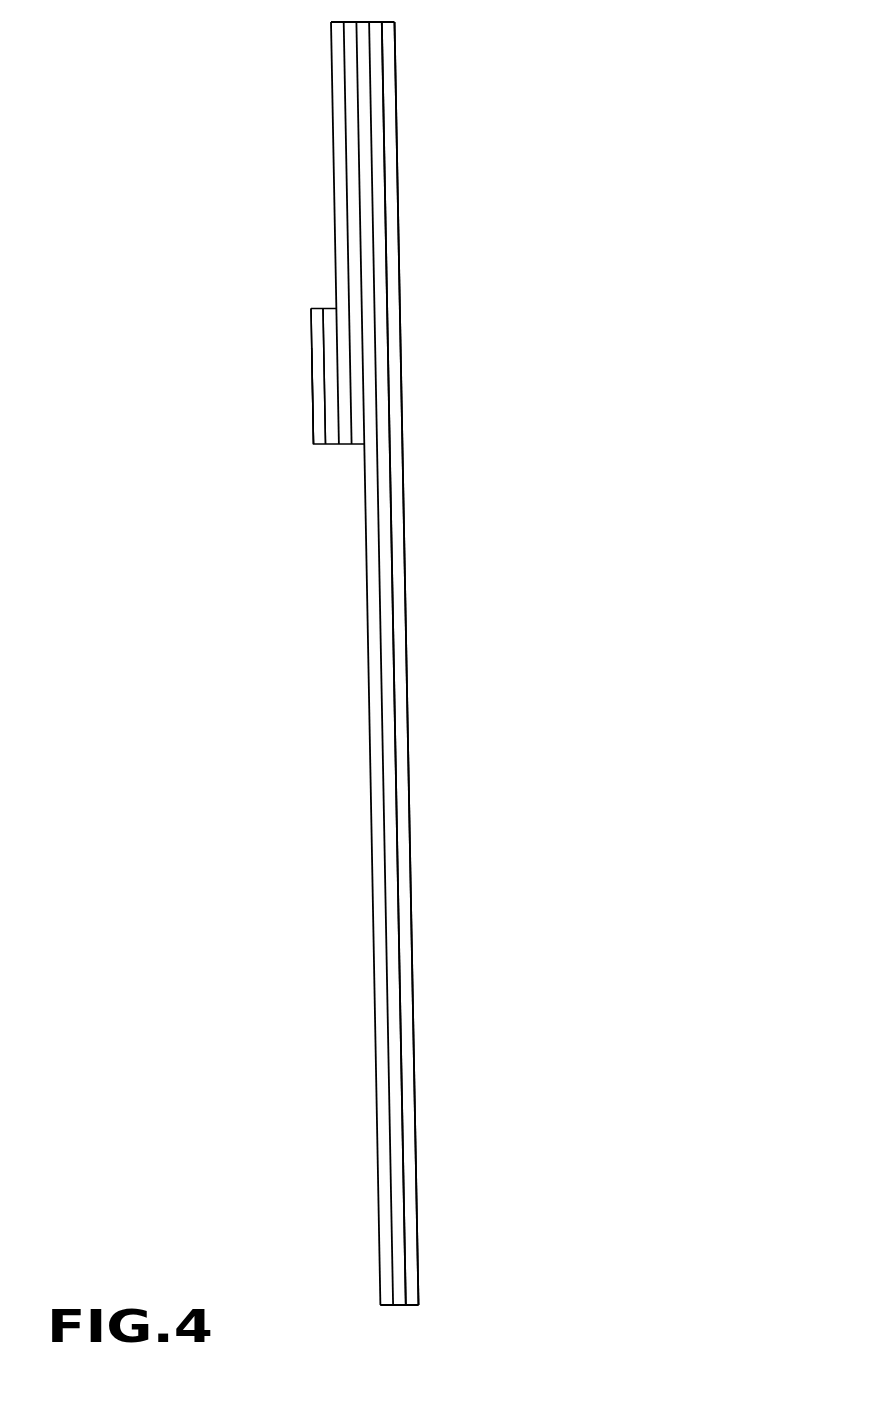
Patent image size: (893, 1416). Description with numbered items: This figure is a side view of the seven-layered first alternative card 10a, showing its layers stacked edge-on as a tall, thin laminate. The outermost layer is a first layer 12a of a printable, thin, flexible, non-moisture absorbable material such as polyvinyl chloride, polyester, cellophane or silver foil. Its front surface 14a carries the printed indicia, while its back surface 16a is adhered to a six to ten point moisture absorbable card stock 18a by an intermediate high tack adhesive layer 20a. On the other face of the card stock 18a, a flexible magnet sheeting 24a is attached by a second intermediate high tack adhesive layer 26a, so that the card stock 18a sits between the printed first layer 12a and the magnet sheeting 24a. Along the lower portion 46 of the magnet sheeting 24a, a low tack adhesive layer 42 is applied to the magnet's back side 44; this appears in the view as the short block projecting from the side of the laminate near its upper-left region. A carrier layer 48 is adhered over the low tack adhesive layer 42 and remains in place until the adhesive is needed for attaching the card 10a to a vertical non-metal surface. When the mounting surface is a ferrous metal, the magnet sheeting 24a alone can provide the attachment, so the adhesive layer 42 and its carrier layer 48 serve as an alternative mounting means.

The first alternative card 10a is at (455, 535).
The first layer 12a is at (404, 1299).
The front surface 14a is at (406, 1045).
The back surface 16a is at (396, 1181).
The card stock 18a is at (379, 1299).
The intermediate high tack adhesive layer 20a is at (391, 1299).
The flexible magnet sheeting 24a is at (337, 438).
The intermediate high tack adhesive layer 26a is at (348, 438).
The low tack adhesive layer 42 is at (324, 438).
The back side 44 is at (330, 347).
The lower portion 46 is at (330, 417).
The carrier layer 48 is at (309, 438).